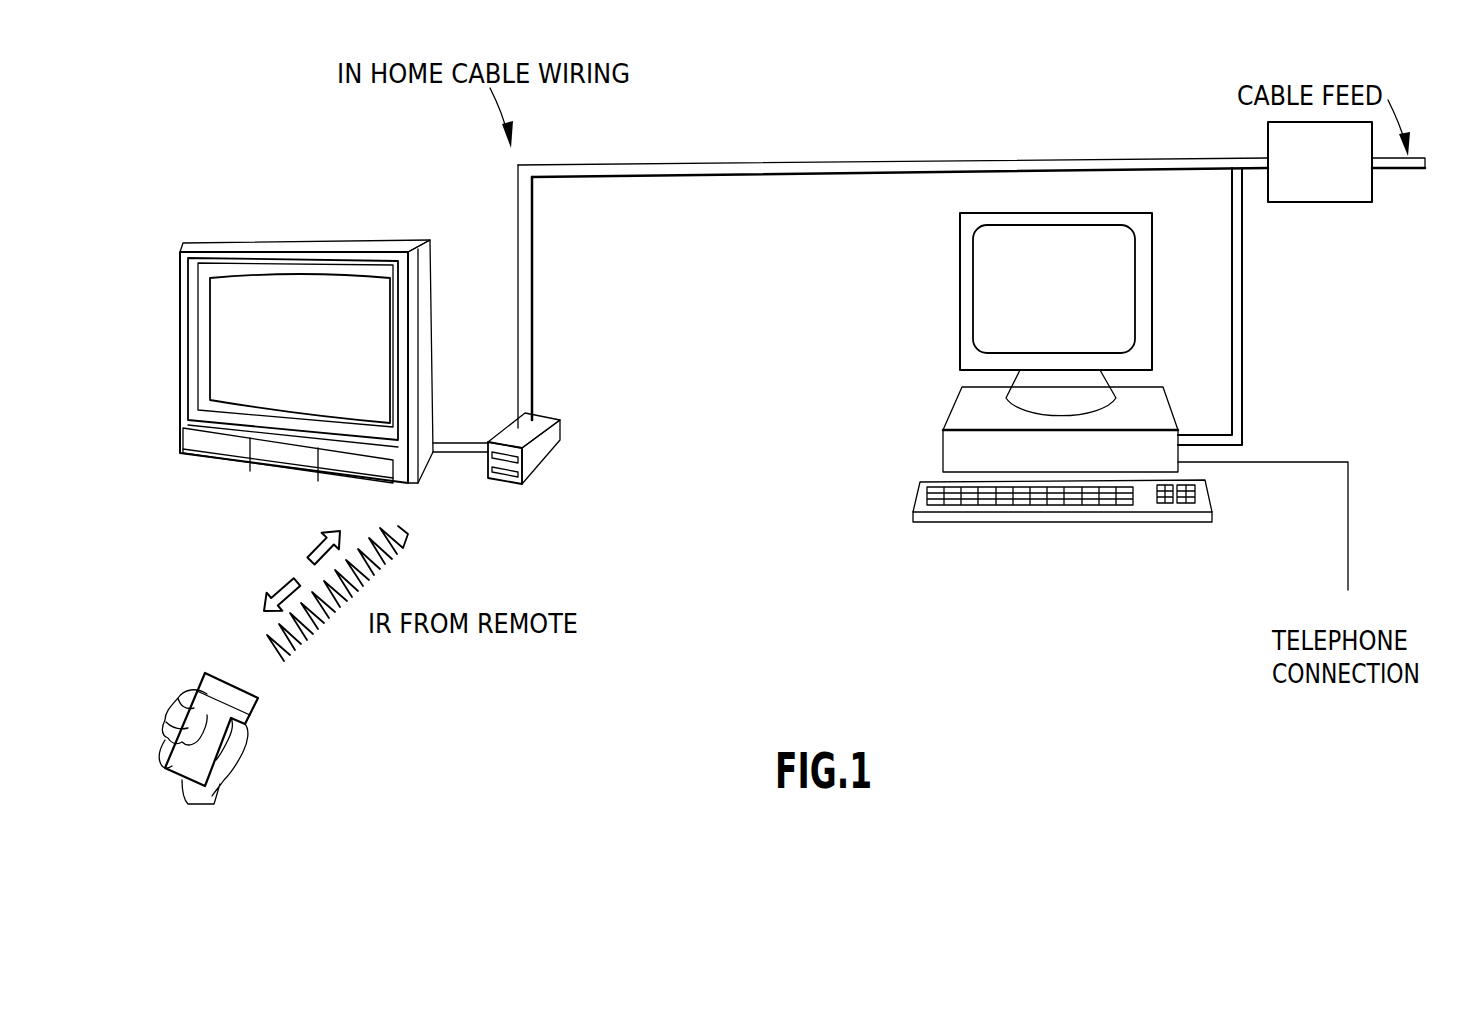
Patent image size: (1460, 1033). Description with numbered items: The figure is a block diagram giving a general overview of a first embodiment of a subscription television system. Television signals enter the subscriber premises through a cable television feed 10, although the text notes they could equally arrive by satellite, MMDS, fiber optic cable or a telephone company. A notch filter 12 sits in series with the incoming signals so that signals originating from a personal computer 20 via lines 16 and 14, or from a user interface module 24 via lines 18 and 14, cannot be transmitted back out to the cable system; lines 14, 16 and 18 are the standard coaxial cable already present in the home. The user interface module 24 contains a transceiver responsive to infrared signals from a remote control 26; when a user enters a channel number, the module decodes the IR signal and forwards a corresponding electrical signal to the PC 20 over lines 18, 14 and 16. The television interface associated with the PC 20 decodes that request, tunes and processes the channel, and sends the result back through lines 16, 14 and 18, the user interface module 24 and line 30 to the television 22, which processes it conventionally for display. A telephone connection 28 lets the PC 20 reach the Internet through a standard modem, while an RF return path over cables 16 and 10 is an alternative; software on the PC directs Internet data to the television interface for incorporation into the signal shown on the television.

The cable television feed 10 is at (1408, 172).
The notch filter 12 is at (1307, 203).
The line 14 is at (677, 163).
The line 16 is at (1243, 358).
The line 18 is at (533, 296).
The personal computer 20 is at (960, 263).
The television 22 is at (180, 286).
The user interface module 24 is at (549, 421).
The remote control 26 is at (210, 672).
The telephone connection 28 is at (1348, 556).
The line 30 is at (445, 455).